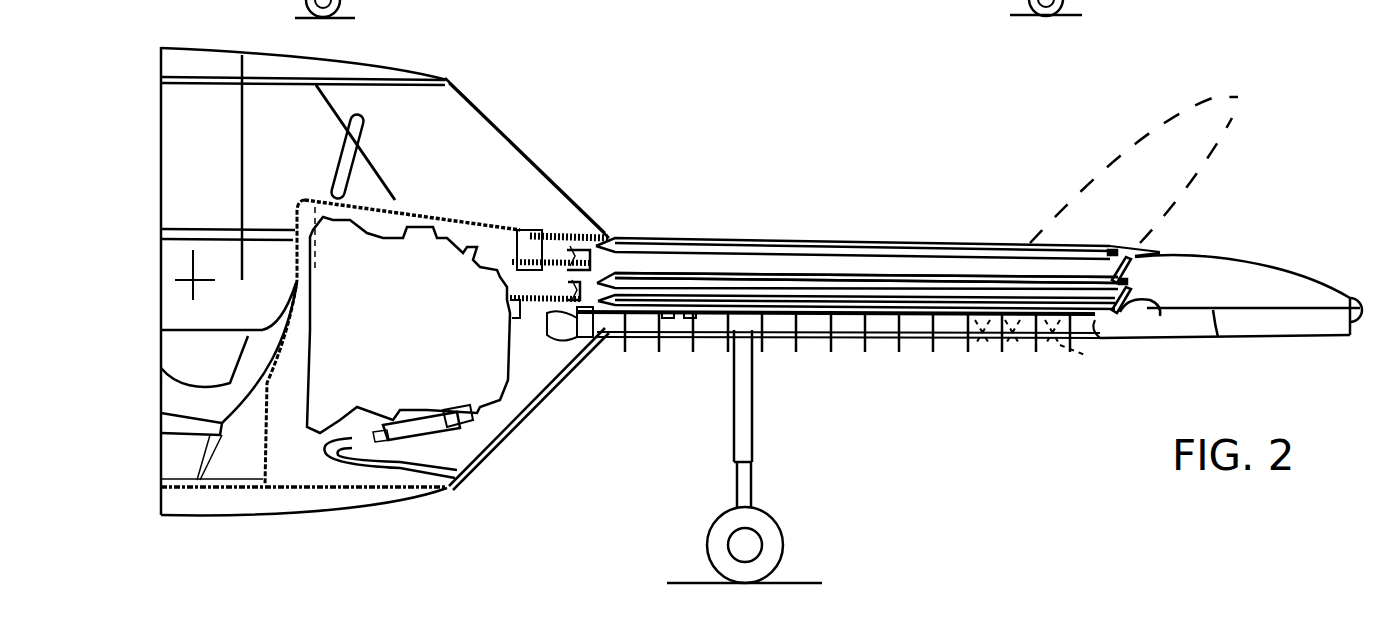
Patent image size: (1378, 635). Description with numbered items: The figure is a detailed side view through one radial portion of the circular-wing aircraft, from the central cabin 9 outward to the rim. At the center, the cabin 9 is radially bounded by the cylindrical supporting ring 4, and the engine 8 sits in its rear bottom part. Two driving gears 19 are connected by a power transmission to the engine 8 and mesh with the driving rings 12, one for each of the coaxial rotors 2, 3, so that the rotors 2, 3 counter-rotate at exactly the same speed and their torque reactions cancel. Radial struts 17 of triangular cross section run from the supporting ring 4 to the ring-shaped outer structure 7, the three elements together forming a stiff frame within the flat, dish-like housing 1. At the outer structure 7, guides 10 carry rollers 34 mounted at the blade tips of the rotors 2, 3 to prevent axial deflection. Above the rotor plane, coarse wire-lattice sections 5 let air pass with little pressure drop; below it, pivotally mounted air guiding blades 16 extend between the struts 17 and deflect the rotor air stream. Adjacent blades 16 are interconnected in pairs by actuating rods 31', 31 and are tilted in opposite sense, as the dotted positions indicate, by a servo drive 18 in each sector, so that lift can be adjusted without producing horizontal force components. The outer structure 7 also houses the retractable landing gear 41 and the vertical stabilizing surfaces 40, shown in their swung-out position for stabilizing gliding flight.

The housing 1 is at (830, 235).
The rotor 2 is at (890, 265).
The rotor 3 is at (925, 296).
The cylindrical supporting ring 4 is at (242, 60).
The wire-lattice sections 5 is at (723, 238).
The outer structure 7 is at (1258, 283).
The engine 8 is at (427, 287).
The cabin 9 is at (480, 98).
The guides 10 is at (1142, 278).
The driving ring 12 is at (612, 238).
The air guiding blades 16 is at (860, 360).
The radial struts 17 is at (947, 320).
The servo drive 18 is at (592, 325).
The driving gears 19 is at (520, 230).
The bracket 31 is at (698, 369).
The actuating rod 31' is at (658, 374).
The rollers 34 is at (1100, 268).
The vertical stabilizing surfaces 40 is at (1252, 109).
The retractable landing gear 41 is at (780, 504).